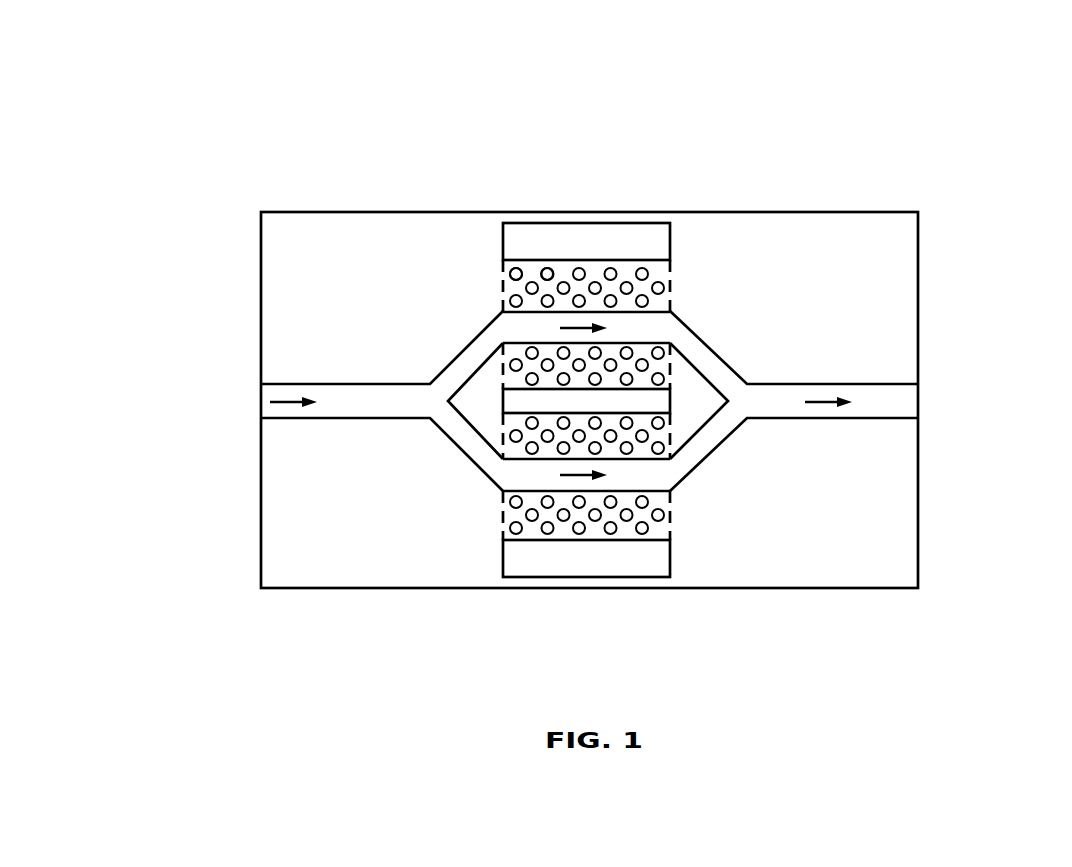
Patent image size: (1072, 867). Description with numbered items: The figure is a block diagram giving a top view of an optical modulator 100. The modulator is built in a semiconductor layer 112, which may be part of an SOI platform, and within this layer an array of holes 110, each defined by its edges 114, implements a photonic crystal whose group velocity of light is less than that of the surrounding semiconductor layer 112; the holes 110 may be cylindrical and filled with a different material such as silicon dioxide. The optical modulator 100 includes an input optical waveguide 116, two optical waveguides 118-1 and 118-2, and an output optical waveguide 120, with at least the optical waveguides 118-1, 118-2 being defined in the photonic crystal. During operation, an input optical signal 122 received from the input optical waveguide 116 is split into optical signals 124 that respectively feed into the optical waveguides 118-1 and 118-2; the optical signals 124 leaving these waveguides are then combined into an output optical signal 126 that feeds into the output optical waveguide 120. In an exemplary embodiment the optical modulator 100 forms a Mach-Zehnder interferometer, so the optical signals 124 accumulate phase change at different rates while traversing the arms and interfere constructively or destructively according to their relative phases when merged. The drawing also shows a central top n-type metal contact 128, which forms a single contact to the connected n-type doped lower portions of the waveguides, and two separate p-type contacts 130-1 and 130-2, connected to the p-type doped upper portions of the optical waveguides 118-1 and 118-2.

The optical modulator 100 is at (473, 333).
The holes 110 is at (547, 274).
The semiconductor layer 112 is at (589, 400).
The edges 114 is at (547, 274).
The input optical waveguide 116 is at (401, 404).
The optical waveguide 118-1 is at (645, 328).
The optical waveguide 118-2 is at (655, 478).
The output optical waveguide 120 is at (758, 406).
The input optical signal 122 is at (282, 402).
The optical signals 124 is at (580, 476).
The output optical signal 126 is at (817, 402).
The n-type metal contact 128 is at (632, 402).
The p-type contact 130-1 is at (618, 243).
The p-type contact 130-2 is at (618, 558).